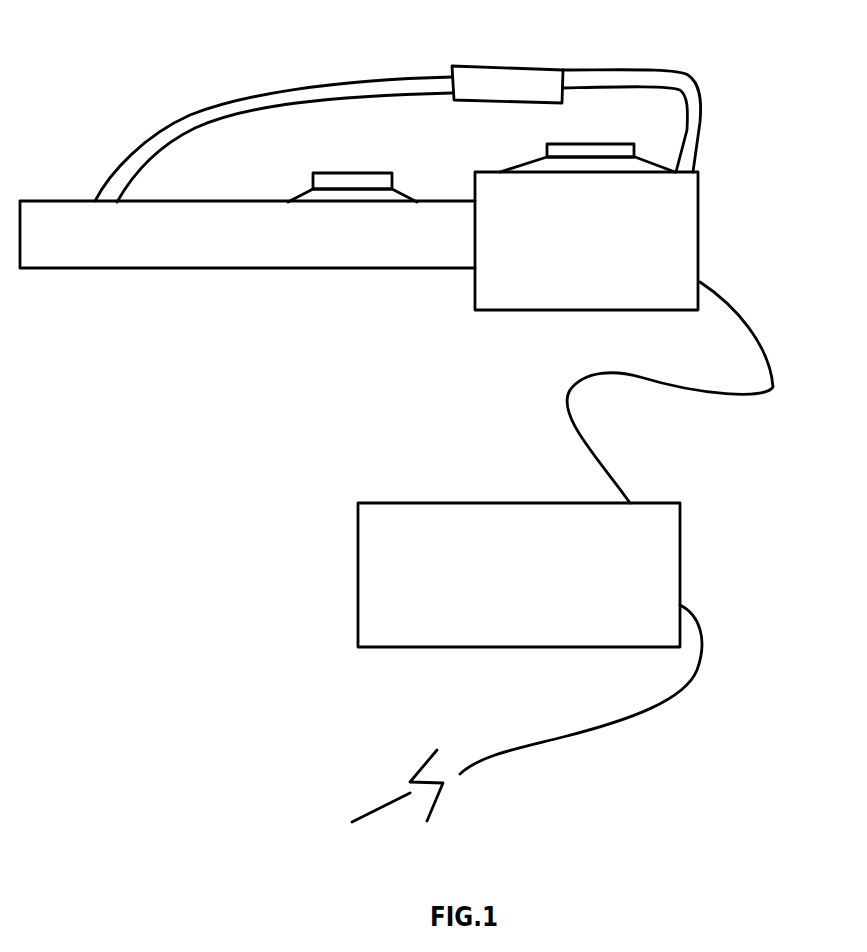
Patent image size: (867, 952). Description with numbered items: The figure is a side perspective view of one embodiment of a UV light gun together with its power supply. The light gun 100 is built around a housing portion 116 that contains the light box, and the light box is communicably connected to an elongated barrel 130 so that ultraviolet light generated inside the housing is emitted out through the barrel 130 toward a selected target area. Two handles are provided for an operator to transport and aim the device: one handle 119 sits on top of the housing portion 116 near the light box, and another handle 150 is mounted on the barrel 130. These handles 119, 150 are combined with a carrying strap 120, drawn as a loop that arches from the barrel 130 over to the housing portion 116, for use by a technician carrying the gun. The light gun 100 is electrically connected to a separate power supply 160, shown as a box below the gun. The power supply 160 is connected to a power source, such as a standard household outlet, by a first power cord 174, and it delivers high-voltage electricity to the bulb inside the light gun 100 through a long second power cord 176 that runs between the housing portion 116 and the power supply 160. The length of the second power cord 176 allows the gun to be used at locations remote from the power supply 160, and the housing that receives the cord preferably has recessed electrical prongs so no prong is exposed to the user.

The light gun 100 is at (792, 168).
The housing portion 116 is at (685, 240).
The handle 119 is at (580, 142).
The carrying strap 120 is at (655, 71).
The barrel 130 is at (215, 255).
The handle 150 is at (370, 172).
The power supply 160 is at (670, 547).
The first power cord 174 is at (552, 761).
The second power cord 176 is at (780, 389).